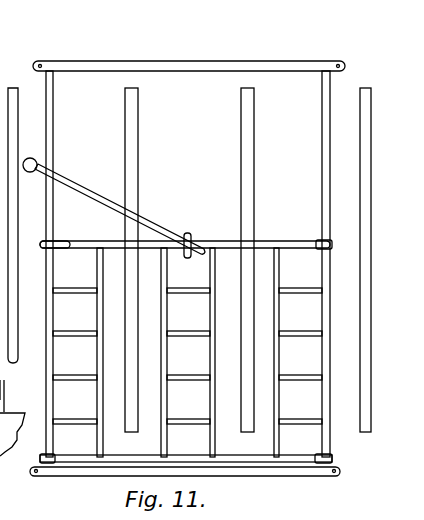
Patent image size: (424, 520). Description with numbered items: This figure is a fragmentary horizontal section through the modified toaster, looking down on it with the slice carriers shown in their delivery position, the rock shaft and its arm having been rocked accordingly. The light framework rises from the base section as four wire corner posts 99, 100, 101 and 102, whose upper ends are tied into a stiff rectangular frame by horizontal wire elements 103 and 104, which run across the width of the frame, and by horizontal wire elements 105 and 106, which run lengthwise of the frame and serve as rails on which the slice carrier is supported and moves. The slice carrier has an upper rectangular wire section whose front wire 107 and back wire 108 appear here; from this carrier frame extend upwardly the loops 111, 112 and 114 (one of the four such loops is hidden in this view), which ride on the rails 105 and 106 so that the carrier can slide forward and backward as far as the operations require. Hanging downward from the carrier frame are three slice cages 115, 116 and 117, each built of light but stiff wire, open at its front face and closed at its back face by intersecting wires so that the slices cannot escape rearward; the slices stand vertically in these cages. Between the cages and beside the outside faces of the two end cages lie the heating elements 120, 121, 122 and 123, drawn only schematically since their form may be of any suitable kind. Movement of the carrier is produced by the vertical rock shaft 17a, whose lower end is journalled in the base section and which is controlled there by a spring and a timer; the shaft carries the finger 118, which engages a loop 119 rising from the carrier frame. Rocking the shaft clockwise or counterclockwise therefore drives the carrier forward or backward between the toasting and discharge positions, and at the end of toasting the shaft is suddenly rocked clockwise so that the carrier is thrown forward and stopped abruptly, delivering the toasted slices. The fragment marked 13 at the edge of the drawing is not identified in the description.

The wire corner post 99 is at (333, 478).
The wire corner post 100 is at (339, 64).
The wire corner post 101 is at (38, 478).
The wire corner post 102 is at (41, 62).
The horizontal wire element 103 is at (260, 476).
The horizontal wire element 104 is at (234, 61).
The horizontal wire element 105 is at (323, 182).
The horizontal wire element 106 is at (53, 141).
The front wire 107 is at (232, 462).
The back wire 108 is at (260, 241).
The loop 111 is at (331, 458).
The loop 112 is at (330, 240).
The loop 114 is at (53, 243).
The slice cage 115 is at (78, 352).
The slice cage 116 is at (188, 352).
The slice cage 117 is at (298, 352).
The finger 118 is at (107, 200).
The loop 119 is at (189, 233).
The heating element 120 is at (17, 80).
The heating element 121 is at (133, 88).
The heating element 122 is at (248, 90).
The heating element 123 is at (365, 90).
The vertical rock shaft 17a is at (37, 165).
The adjacent structure 13 is at (40, 458).